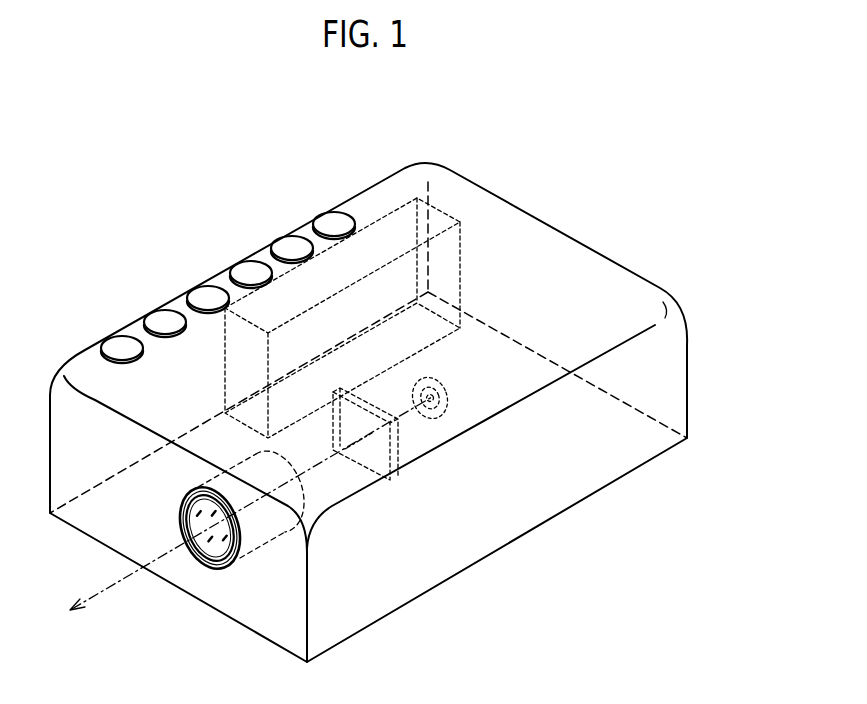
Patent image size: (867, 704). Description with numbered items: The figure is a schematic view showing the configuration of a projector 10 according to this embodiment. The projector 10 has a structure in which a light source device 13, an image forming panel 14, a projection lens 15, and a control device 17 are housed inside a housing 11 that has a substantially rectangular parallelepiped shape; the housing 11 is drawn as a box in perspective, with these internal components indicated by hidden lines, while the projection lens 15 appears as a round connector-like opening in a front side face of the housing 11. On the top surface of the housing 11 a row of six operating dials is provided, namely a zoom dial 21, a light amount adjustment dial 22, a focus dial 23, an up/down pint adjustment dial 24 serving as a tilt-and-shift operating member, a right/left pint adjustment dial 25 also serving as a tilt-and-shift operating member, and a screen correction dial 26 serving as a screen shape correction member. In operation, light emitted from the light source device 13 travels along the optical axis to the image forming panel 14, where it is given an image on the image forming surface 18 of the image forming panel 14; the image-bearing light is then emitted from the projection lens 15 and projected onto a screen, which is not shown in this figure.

The projector 10 is at (441, 107).
The housing 11 is at (553, 240).
The light source device 13 is at (443, 389).
The image forming panel 14 is at (402, 455).
The projection lens 15 is at (260, 541).
The control device 17 is at (440, 217).
The image forming surface 18 is at (372, 458).
The zoom dial 21 is at (116, 340).
The light amount adjustment dial 22 is at (157, 318).
The focus dial 23 is at (200, 293).
The up/down pint adjustment dial 24 is at (243, 267).
The right/left pint adjustment dial 25 is at (285, 243).
The screen correction dial 26 is at (325, 218).